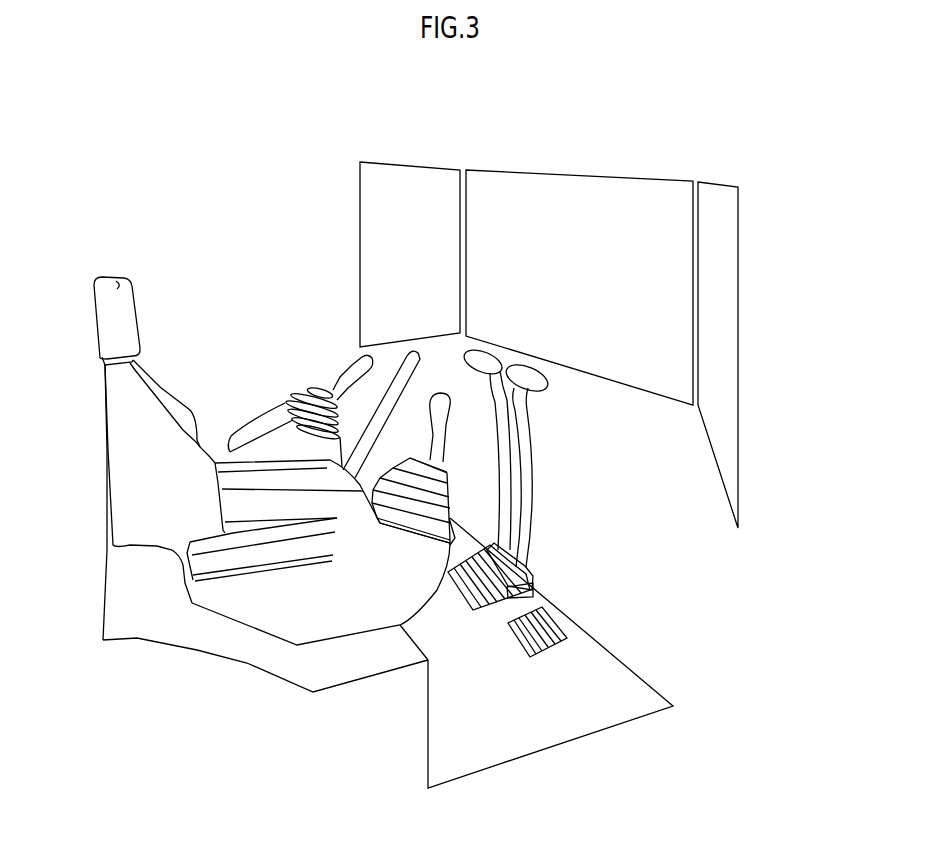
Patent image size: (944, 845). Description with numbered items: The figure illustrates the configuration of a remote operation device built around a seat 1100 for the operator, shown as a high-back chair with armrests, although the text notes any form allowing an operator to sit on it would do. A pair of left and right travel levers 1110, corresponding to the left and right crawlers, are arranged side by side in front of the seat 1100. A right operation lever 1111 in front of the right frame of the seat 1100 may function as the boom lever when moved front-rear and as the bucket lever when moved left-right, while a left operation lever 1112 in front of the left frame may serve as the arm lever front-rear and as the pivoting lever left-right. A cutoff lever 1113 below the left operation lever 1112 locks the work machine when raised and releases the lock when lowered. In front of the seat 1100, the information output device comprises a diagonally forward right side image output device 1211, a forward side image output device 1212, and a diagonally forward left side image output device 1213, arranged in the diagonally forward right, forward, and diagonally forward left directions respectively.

The seat 1100 is at (298, 436).
The travel levers 1110 is at (537, 455).
The right operation lever 1111 is at (452, 422).
The left operation lever 1112 is at (352, 353).
The cutoff lever 1113 is at (413, 350).
The diagonally forward right side image output device 1211 is at (727, 180).
The forward side image output device 1212 is at (578, 177).
The diagonally forward left side image output device 1213 is at (423, 167).